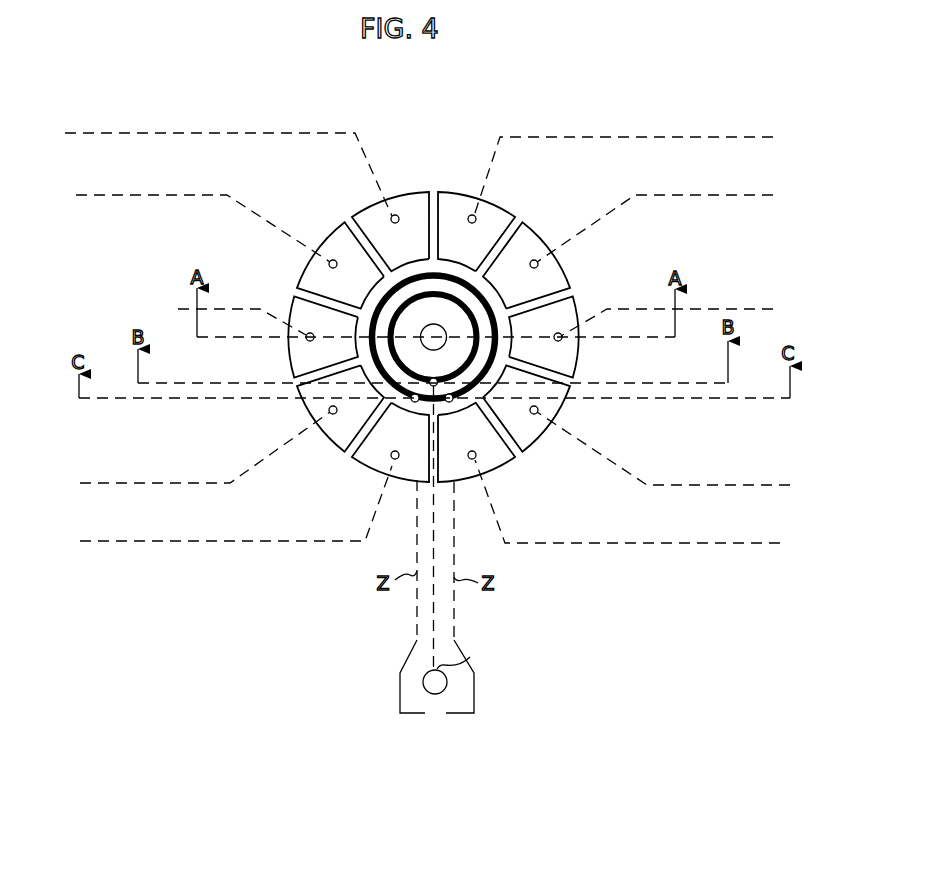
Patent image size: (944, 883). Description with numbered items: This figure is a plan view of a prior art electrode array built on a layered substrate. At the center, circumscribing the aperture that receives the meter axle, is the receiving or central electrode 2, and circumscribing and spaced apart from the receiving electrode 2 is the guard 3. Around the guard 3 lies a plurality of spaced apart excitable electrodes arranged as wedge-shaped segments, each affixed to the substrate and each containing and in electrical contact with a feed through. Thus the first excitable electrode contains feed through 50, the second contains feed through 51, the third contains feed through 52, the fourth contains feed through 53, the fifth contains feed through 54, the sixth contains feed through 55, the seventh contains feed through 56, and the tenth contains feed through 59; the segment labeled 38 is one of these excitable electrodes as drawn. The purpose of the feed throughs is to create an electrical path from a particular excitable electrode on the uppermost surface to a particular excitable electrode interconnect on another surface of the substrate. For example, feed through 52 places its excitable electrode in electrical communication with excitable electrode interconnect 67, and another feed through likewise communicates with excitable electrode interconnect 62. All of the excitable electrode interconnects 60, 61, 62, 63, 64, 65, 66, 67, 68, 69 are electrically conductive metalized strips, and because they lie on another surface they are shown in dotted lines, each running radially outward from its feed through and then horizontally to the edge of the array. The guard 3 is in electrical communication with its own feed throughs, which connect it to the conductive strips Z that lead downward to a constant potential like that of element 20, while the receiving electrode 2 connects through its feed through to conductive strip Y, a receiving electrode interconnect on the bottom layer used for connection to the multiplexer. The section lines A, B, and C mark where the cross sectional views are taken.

The receiving electrode 2 is at (400, 297).
The guard 3 is at (399, 393).
The constant potential element 20 is at (437, 695).
The pole segment 38 is at (329, 264).
The feed through 50 is at (475, 216).
The feed through 51 is at (535, 260).
The feed through 52 is at (562, 337).
The feed through 53 is at (537, 414).
The feed through 54 is at (476, 456).
The feed through 55 is at (395, 459).
The feed through 56 is at (333, 414).
The feed through 59 is at (395, 215).
The excitable electrode interconnect 60 is at (71, 133).
The excitable electrode interconnect 61 is at (76, 193).
The excitable electrode interconnect 62 is at (213, 309).
The excitable electrode interconnect 63 is at (86, 483).
The excitable electrode interconnect 64 is at (86, 541).
The excitable electrode interconnect 65 is at (780, 543).
The excitable electrode interconnect 66 is at (785, 485).
The excitable electrode interconnect 67 is at (785, 309).
The excitable electrode interconnect 68 is at (775, 193).
The excitable electrode interconnect 69 is at (775, 134).